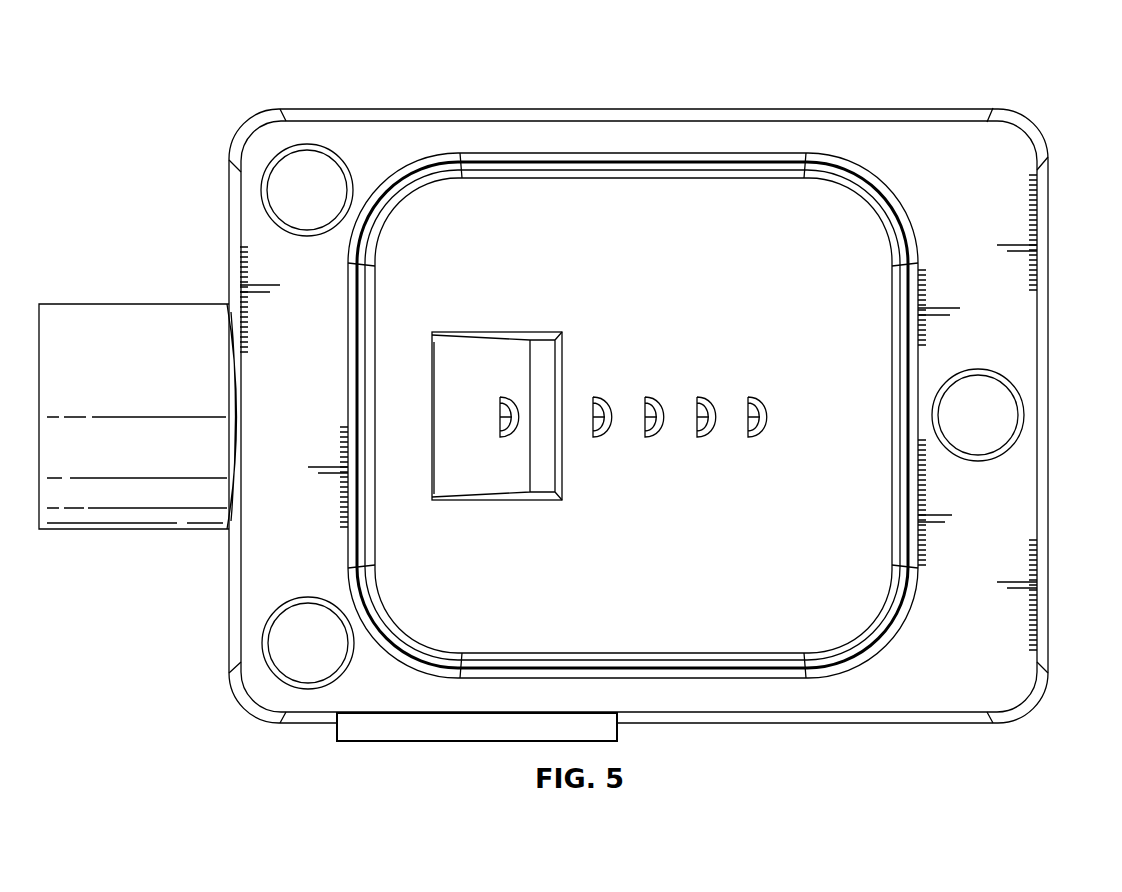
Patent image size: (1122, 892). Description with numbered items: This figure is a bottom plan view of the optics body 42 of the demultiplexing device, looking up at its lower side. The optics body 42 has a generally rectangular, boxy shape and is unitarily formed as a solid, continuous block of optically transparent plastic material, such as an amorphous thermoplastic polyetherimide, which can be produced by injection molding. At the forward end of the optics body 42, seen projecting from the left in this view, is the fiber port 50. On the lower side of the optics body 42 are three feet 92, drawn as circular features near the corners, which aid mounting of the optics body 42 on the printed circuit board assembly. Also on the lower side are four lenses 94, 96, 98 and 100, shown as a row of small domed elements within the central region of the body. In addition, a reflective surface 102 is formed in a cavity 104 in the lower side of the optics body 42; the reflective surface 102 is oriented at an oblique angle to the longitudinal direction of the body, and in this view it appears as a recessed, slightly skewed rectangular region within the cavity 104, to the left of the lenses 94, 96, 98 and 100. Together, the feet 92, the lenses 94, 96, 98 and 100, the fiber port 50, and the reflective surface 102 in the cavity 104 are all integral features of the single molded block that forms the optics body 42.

The optics body 42 is at (256, 61).
The fiber port 50 is at (127, 530).
The feet 92 is at (261, 189).
The lens 94 is at (607, 393).
The lens 96 is at (646, 437).
The lens 98 is at (709, 395).
The lens 100 is at (760, 438).
The reflective surface 102 is at (508, 332).
The cavity 104 is at (502, 480).